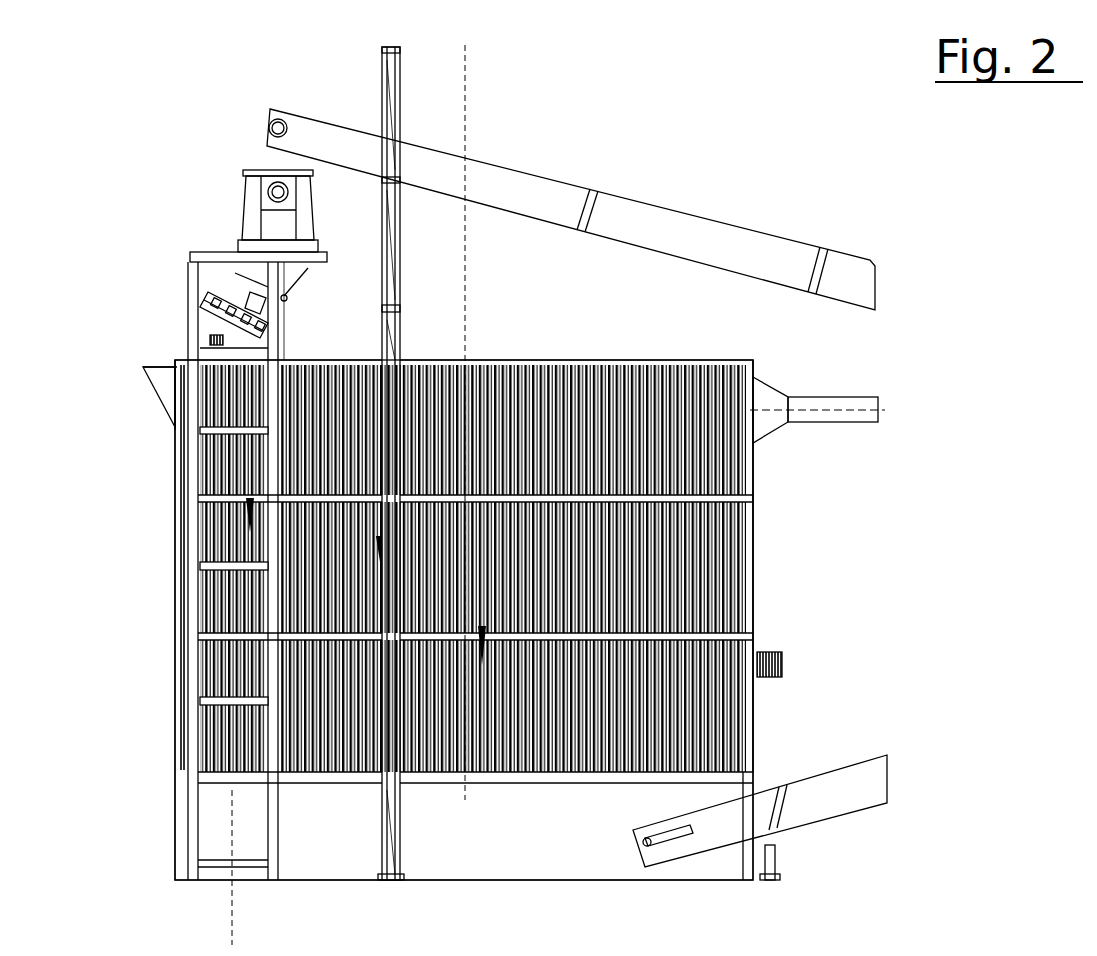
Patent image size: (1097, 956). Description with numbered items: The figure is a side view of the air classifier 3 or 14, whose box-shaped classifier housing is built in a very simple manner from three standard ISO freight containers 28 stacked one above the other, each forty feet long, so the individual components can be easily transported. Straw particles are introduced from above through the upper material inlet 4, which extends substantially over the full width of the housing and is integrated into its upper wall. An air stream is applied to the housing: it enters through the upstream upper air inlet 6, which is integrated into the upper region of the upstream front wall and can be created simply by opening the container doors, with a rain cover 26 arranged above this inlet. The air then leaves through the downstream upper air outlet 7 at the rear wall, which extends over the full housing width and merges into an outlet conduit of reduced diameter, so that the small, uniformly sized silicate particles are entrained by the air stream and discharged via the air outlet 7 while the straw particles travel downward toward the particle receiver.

The classifier 3 is at (922, 357).
The classifier 14 is at (622, 598).
The upper material inlet 4 is at (216, 238).
The upstream upper air inlet 6 is at (156, 404).
The downstream upper air outlet 7 is at (762, 377).
The rain cover 26 is at (157, 367).
The standard containers 28 is at (760, 713).